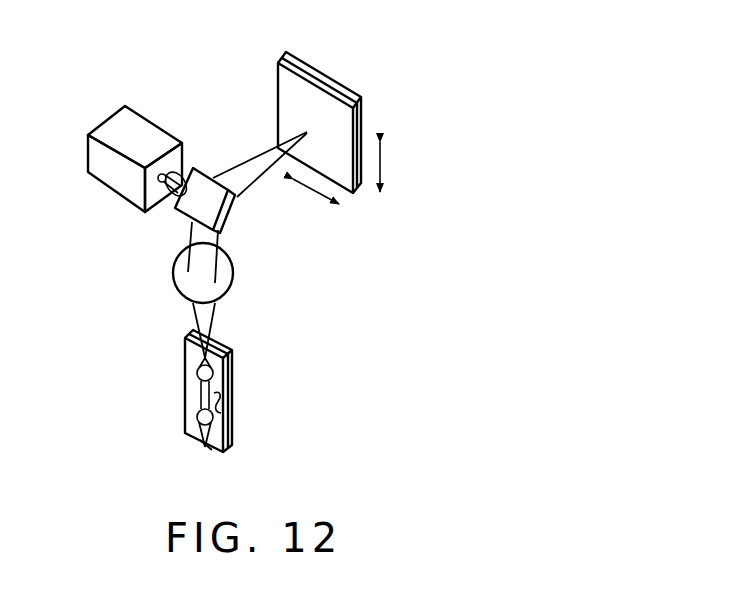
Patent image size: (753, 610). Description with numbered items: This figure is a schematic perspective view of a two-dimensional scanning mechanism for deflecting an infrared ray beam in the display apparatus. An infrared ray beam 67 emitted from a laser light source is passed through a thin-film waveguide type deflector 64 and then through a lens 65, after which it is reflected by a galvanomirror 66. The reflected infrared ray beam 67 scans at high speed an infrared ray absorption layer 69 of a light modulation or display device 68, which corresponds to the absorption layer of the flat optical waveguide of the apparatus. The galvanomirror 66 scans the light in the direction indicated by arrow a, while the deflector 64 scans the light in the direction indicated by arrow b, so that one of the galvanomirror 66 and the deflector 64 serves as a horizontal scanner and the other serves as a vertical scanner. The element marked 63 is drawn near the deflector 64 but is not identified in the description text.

The sample 63 is at (210, 449).
The thin-film waveguide type deflector 64 is at (225, 409).
The lens 65 is at (171, 286).
The galvanomirror 66 is at (205, 190).
The infrared ray beam 67 is at (260, 160).
The display device 68 is at (336, 76).
The infrared ray absorption layer 69 is at (360, 103).